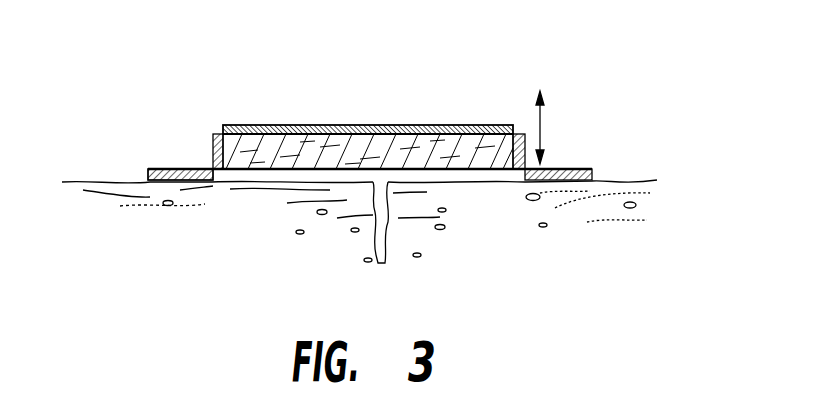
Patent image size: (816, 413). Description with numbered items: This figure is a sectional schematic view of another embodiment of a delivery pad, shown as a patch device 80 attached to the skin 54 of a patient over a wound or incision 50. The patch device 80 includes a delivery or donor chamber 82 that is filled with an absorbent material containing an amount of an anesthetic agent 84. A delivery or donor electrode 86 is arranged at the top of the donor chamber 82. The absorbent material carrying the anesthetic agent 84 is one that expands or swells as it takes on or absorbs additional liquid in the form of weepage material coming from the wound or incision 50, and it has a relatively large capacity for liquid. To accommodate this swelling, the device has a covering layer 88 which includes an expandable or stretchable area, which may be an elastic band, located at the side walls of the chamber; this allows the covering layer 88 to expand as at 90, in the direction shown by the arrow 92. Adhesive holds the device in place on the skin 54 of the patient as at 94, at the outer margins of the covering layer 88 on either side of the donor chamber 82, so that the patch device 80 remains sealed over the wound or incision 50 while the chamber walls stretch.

The patch device 80 is at (176, 93).
The delivery or donor chamber 82 is at (456, 131).
The anesthetic agent 84 is at (258, 133).
The delivery or donor electrode 86 is at (345, 133).
The covering layer 88 is at (178, 169).
The expandable area 90 is at (213, 171).
The arrow 92 is at (545, 135).
The adhesive 94 is at (172, 181).
The wound or incision 50 is at (392, 227).
The skin 54 is at (630, 178).